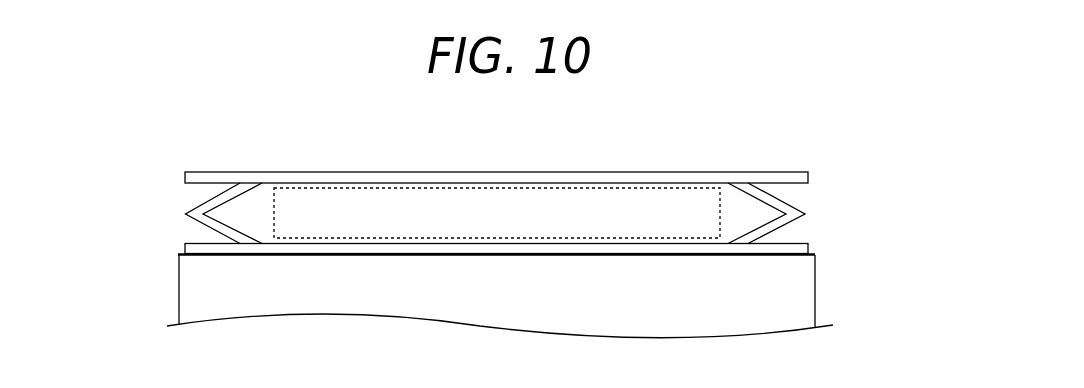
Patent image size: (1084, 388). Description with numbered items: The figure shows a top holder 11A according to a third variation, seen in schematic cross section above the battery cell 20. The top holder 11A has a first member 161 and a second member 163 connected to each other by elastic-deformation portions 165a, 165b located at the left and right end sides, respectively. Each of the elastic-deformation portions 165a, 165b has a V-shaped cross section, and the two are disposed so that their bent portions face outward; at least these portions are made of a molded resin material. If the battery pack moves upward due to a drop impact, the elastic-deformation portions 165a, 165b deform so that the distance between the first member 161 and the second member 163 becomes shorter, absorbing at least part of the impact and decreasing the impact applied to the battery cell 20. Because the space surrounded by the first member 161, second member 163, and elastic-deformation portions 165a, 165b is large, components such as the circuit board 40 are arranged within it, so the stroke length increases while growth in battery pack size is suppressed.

The battery cell 20 is at (805, 291).
The first member 161 is at (186, 247).
The second member 163 is at (186, 177).
The elastic-deformation portion 165a is at (186, 214).
The elastic-deformation portion 165b is at (806, 214).
The circuit board 40 is at (665, 208).
The top holder 11A is at (821, 190).